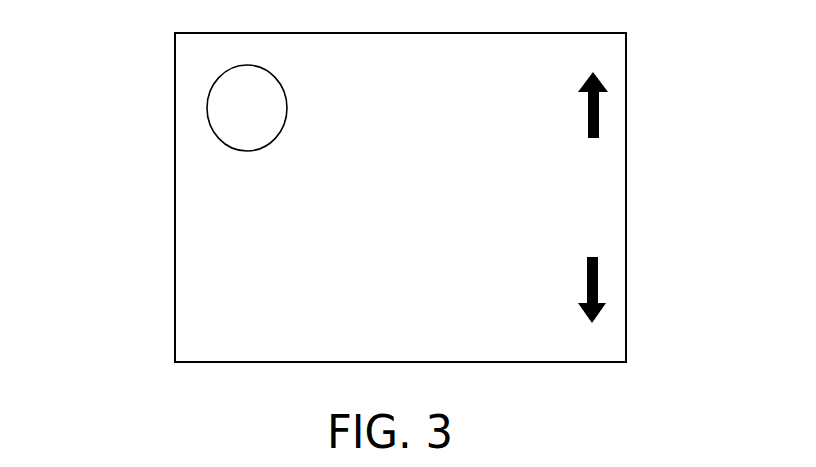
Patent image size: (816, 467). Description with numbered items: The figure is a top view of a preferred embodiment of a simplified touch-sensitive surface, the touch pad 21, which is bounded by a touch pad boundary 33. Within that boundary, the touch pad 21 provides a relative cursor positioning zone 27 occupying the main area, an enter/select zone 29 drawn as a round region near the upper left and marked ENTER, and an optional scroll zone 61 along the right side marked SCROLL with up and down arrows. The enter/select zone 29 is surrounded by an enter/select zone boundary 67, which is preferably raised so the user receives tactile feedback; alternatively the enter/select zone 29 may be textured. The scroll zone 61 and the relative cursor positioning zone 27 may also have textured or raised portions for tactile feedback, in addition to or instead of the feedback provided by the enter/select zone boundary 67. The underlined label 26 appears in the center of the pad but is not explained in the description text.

The touch pad 21 is at (133, 222).
The display message area 26 is at (420, 214).
The relative cursor positioning zone 27 is at (247, 287).
The enter/select zone 29 is at (247, 90).
The touch pad boundary 33 is at (626, 278).
The scroll zone 61 is at (622, 183).
The enter/select zone boundary 67 is at (228, 148).